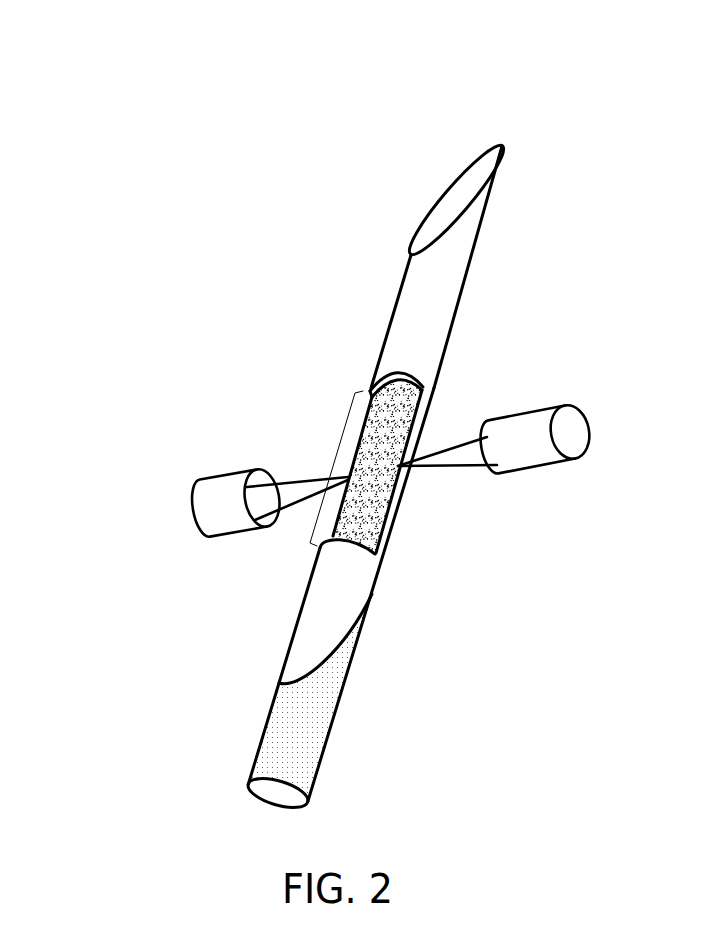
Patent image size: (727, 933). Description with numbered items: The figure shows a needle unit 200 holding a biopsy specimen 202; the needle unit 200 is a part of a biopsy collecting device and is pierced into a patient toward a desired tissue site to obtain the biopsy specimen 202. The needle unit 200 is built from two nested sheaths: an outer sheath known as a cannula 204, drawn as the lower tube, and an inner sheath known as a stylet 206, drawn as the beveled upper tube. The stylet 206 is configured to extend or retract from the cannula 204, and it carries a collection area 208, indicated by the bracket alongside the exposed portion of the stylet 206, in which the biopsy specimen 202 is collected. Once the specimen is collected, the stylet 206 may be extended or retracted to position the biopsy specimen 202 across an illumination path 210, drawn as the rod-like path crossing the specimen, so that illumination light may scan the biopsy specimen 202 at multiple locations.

The needle unit 200 is at (160, 78).
The biopsy specimen 202 is at (377, 532).
The cannula 204 is at (321, 730).
The stylet 206 is at (464, 272).
The collection area 208 is at (348, 421).
The illumination path 210 is at (470, 447).